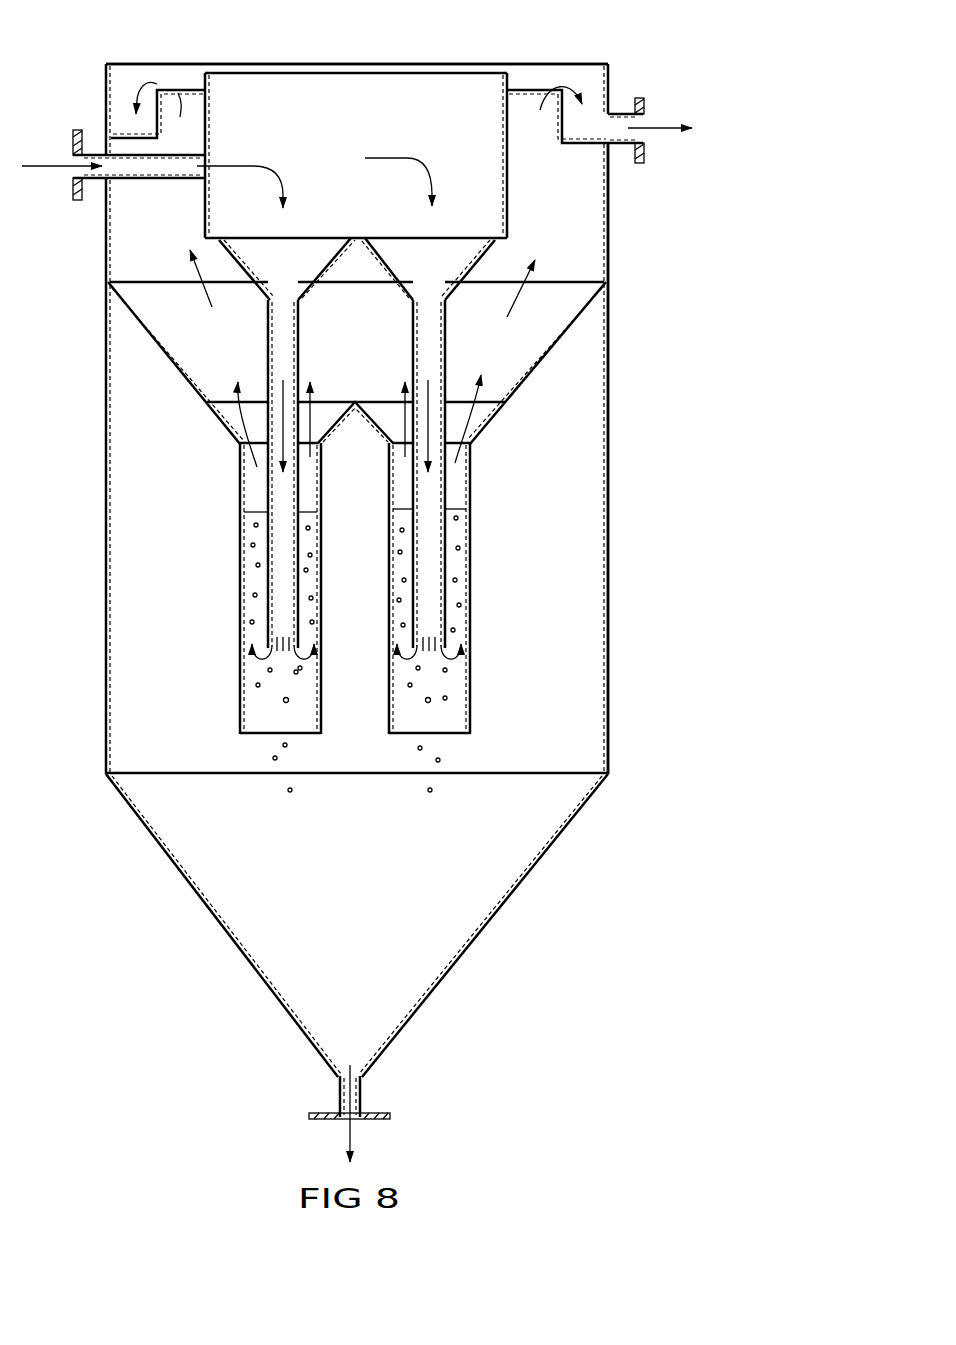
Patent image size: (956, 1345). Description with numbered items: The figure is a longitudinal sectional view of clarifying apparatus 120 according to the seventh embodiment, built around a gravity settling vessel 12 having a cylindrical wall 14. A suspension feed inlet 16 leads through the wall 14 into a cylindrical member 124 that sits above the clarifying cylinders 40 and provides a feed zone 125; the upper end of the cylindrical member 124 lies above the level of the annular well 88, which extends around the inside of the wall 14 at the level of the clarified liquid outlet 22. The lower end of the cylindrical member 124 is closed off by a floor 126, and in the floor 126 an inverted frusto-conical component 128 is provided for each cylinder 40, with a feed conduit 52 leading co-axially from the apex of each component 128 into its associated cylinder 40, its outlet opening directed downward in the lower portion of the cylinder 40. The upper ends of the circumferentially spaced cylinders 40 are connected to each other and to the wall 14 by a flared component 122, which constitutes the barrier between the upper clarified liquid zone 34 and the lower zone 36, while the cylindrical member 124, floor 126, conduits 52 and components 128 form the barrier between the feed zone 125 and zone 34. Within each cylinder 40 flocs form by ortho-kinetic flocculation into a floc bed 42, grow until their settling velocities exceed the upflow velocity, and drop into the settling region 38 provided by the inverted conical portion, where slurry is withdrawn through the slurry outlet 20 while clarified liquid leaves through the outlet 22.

The gravity settling vessel 12 is at (660, 400).
The cylindrical wall 14 is at (609, 583).
The suspension feed inlet 16 is at (97, 181).
The slurry outlet 20 is at (364, 1096).
The clarified liquid outlet 22 is at (623, 113).
The upper clarified liquid zone 34 is at (570, 253).
The lower zone 36 is at (545, 513).
The settling region 38 is at (460, 892).
The clarifying cylinder 40 is at (240, 618).
The floc bed 42 is at (258, 553).
The feed conduit 52 is at (413, 353).
The annular well 88 is at (123, 131).
The clarifying apparatus 120 is at (718, 476).
The flared component 122 is at (185, 374).
The cylindrical member 124 is at (204, 97).
The feed zone 125 is at (478, 203).
The floor 126 is at (362, 240).
The inverted frusto-conical component 128 is at (382, 264).